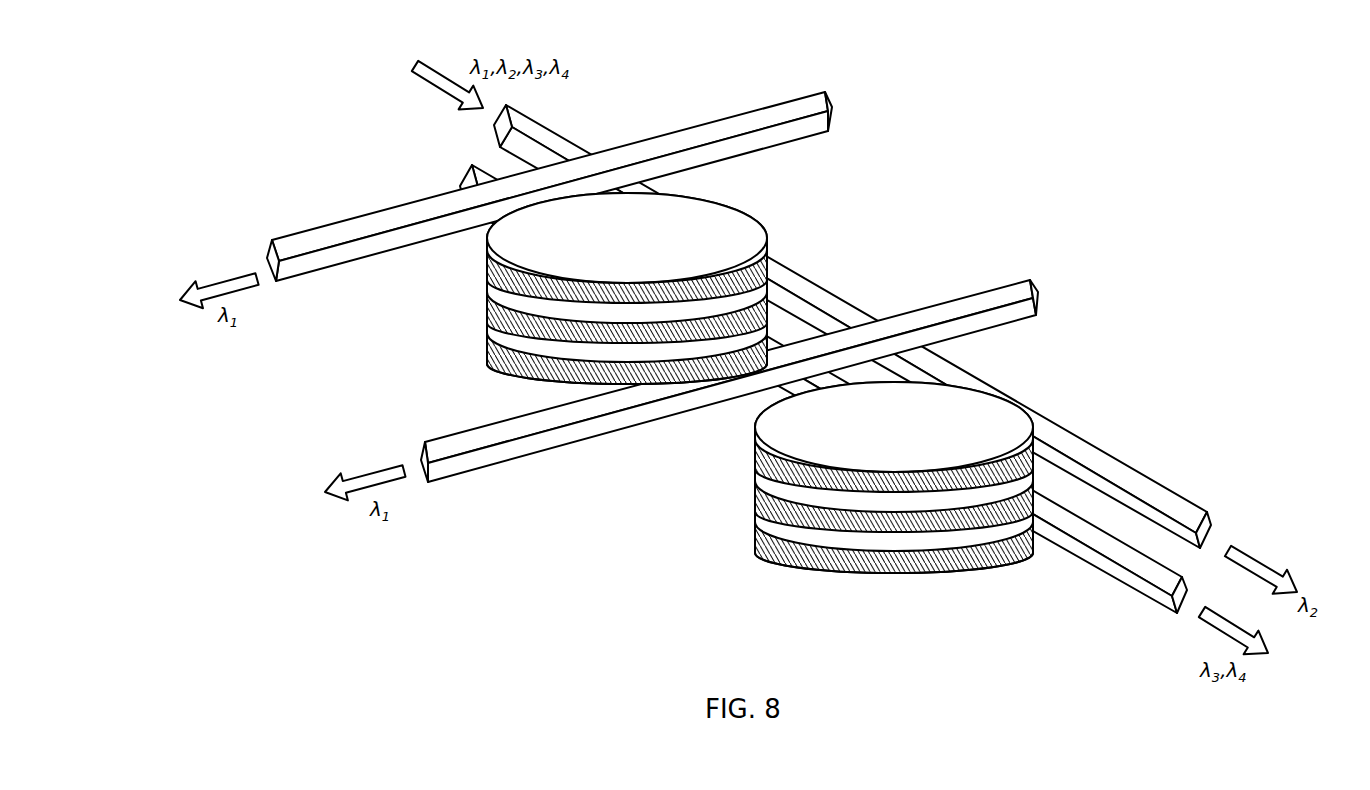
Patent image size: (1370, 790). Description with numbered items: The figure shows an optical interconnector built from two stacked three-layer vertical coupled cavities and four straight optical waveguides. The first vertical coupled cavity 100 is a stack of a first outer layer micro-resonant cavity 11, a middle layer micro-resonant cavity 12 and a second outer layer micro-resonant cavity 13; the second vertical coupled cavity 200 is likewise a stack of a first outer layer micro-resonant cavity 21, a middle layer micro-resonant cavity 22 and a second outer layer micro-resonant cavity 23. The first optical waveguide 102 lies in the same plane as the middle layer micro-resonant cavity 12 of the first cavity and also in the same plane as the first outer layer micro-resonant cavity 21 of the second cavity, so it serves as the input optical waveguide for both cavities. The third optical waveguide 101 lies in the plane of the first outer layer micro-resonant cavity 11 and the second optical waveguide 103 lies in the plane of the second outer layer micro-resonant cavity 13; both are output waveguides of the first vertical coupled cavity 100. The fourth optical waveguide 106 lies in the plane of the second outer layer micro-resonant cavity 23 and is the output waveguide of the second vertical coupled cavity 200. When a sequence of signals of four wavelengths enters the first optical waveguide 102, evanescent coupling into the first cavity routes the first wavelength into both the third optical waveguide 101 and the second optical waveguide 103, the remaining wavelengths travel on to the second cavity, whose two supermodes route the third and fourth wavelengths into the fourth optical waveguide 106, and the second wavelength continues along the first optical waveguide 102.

The first vertical coupled cavity 100 is at (609, 278).
The first outer layer micro-resonant cavity 11 is at (508, 275).
The middle layer micro-resonant cavity 12 is at (507, 320).
The second outer layer micro-resonant cavity 13 is at (505, 363).
The second vertical coupled cavity 200 is at (878, 470).
The first outer layer micro-resonant cavity 21 is at (752, 452).
The middle layer micro-resonant cavity 22 is at (754, 495).
The second outer layer micro-resonant cavity 23 is at (757, 534).
The third optical waveguide 101 is at (683, 128).
The first optical waveguide 102 is at (1090, 442).
The second optical waveguide 103 is at (978, 293).
The fourth optical waveguide 106 is at (1097, 570).